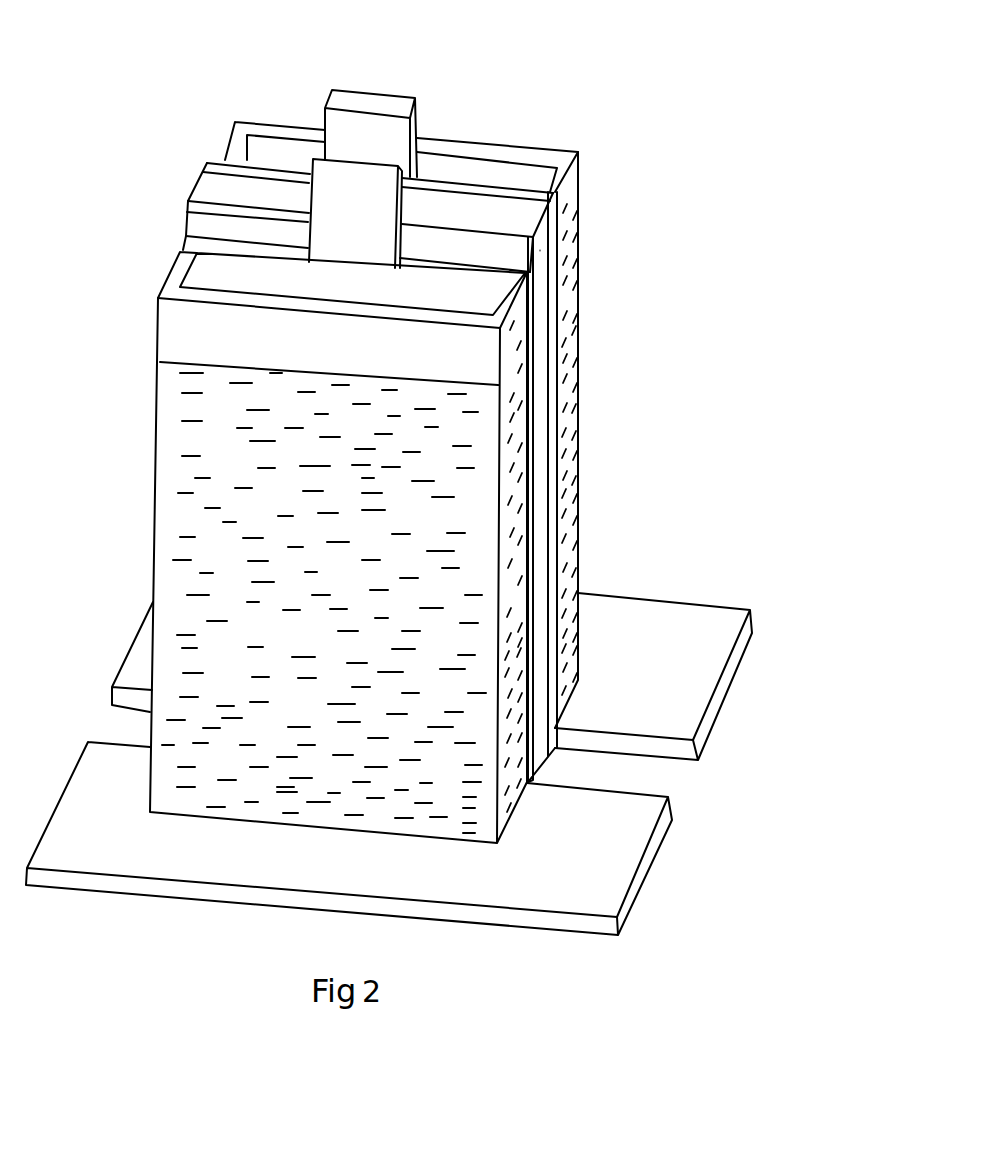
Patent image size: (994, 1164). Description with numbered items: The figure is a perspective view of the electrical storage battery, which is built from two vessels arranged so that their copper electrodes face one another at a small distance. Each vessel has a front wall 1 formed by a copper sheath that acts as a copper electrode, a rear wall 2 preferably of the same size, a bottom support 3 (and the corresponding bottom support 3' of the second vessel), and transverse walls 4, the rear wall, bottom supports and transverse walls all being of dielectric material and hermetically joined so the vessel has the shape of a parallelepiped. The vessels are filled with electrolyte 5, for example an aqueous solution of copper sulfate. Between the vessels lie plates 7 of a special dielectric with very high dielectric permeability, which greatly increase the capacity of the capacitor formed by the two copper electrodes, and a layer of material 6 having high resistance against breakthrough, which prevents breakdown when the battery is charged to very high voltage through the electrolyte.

The front wall 1 is at (372, 133).
The rear wall 2 is at (250, 297).
The bottom support 3 is at (423, 838).
The bottom support 3' is at (492, 676).
The transverse walls 4 is at (228, 143).
The electrolyte 5 is at (567, 358).
The layer of material 6 is at (538, 267).
The plates 7 is at (552, 237).